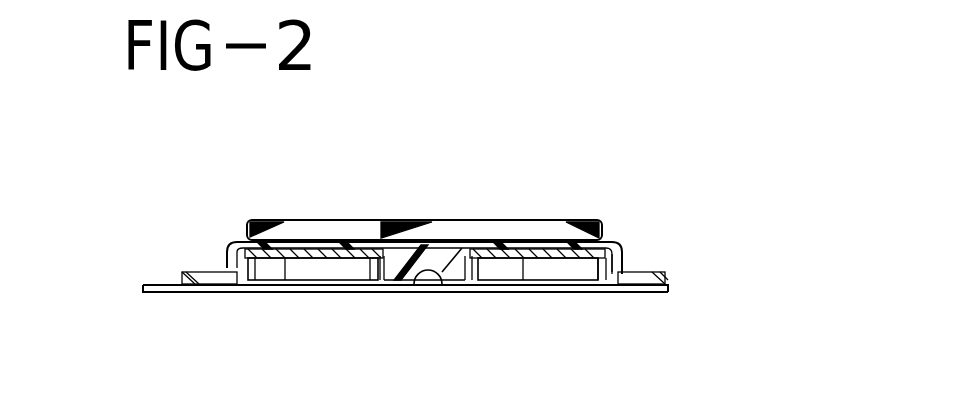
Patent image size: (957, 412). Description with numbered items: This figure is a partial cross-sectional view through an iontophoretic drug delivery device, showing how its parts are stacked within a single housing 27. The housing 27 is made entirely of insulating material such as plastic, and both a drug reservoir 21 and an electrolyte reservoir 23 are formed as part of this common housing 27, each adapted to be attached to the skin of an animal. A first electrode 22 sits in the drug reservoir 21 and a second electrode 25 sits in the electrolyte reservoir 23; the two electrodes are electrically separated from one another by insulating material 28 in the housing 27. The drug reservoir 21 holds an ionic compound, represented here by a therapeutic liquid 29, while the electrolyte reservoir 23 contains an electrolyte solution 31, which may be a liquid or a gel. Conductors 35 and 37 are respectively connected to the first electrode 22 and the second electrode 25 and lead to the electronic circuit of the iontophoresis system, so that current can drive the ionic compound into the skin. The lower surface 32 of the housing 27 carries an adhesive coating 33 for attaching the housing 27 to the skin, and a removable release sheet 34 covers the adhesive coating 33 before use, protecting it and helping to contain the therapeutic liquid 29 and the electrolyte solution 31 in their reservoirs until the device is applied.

The drug reservoir 21 is at (382, 264).
The first electrode 22 is at (283, 285).
The electrolyte reservoir 23 is at (490, 287).
The second electrode 25 is at (567, 287).
The housing 27 is at (380, 212).
The insulating material 28 is at (448, 272).
The therapeutic liquid 29 is at (228, 268).
The electrolyte solution 31 is at (626, 272).
The lower surface 32 is at (448, 284).
The adhesive coating 33 is at (680, 287).
The removable release sheet 34 is at (157, 287).
The conductor 35 is at (302, 246).
The conductor 37 is at (537, 256).